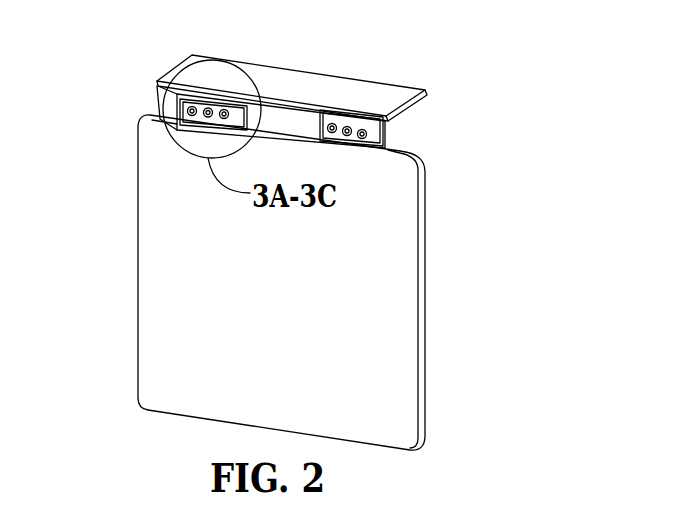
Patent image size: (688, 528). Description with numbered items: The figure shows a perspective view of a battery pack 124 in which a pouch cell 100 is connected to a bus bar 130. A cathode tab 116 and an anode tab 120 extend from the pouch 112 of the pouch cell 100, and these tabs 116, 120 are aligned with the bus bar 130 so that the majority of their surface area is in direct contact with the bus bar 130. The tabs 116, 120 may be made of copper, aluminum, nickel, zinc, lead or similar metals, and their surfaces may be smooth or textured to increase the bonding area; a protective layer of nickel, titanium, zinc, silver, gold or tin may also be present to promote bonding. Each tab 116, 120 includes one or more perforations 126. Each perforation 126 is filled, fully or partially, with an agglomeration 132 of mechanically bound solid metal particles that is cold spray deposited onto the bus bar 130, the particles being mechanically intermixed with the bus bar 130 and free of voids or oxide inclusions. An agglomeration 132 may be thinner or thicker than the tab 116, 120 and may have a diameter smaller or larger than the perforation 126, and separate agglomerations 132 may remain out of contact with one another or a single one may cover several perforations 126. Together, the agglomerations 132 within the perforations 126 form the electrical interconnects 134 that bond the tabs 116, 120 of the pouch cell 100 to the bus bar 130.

The pouch cell 100 is at (388, 290).
The pouch 112 is at (388, 350).
The cathode tab 116 is at (160, 88).
The anode tab 120 is at (384, 147).
The battery pack 124 is at (508, 133).
The perforation 126 is at (183, 118).
The bus bar 130 is at (388, 128).
The agglomeration 132 is at (227, 100).
The electrical interconnect 134 is at (333, 126).